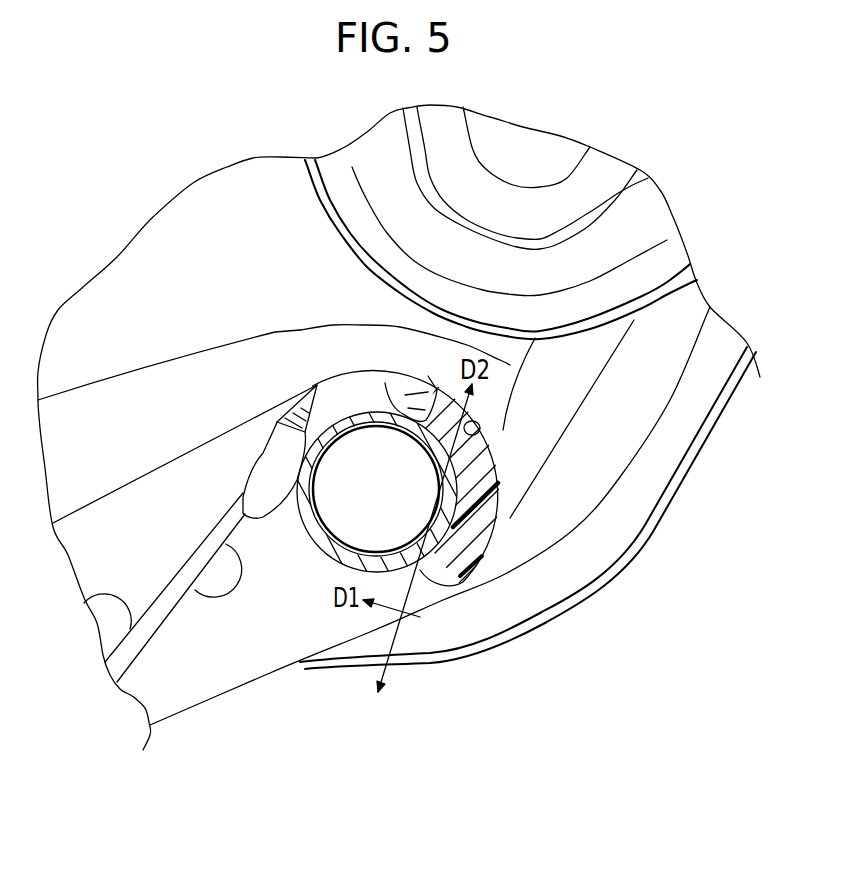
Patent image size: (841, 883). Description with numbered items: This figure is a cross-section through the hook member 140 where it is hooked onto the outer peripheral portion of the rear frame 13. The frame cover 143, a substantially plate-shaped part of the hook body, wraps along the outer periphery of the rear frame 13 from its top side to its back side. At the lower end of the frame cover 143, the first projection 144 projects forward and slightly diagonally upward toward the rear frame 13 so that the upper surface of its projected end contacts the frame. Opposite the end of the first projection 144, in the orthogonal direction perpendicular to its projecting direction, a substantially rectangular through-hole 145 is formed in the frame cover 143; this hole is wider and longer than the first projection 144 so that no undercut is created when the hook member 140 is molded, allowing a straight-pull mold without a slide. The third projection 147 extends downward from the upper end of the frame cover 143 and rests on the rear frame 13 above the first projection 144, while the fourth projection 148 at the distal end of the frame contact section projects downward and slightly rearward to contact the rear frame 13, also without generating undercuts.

The rear frame 13 is at (323, 552).
The hook member 140 is at (291, 379).
The frame cover 143 is at (500, 546).
The first projection 144 is at (420, 570).
The through-hole 145 is at (503, 420).
The third projection 147 is at (410, 402).
The fourth projection 148 is at (277, 493).